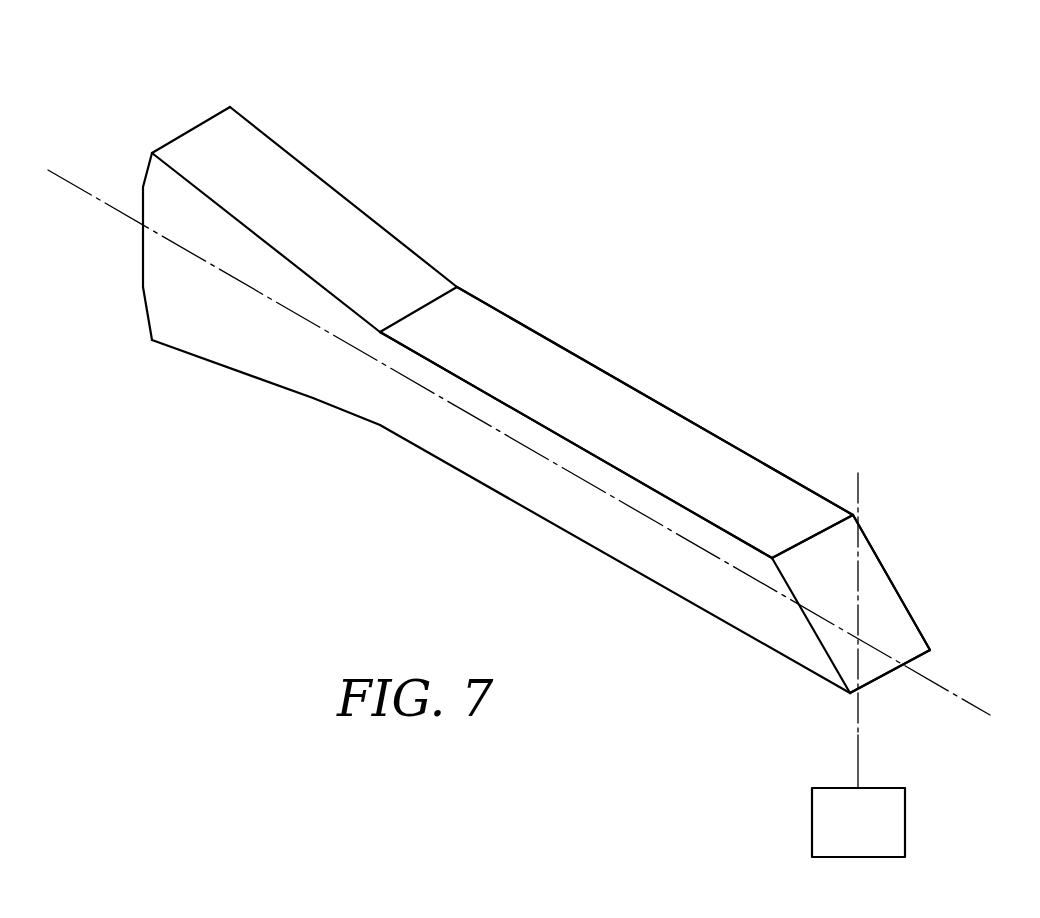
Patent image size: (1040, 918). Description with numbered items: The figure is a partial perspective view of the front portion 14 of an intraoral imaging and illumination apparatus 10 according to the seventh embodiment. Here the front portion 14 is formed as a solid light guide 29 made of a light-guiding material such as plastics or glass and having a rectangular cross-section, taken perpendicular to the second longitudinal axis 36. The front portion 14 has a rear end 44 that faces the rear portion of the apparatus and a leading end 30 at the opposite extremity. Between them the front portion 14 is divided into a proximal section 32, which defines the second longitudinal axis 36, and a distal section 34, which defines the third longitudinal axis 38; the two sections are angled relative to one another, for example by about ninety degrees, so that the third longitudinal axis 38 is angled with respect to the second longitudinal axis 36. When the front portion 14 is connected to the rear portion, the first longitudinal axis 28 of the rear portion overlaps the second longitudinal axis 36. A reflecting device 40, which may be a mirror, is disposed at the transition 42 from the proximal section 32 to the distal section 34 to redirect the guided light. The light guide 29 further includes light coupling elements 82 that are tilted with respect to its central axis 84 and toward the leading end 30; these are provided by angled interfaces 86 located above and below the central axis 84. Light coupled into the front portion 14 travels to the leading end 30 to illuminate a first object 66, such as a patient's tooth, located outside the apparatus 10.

The intraoral imaging and illumination apparatus 10 is at (502, 400).
The front portion 14 is at (675, 387).
The first longitudinal axis 28 is at (67, 178).
The light guide 29 is at (562, 317).
The leading end 30 is at (873, 685).
The proximal section 32 is at (655, 379).
The distal section 34 is at (897, 583).
The second longitudinal axis 36 is at (594, 445).
The third longitudinal axis 38 is at (852, 697).
The reflecting device 40 is at (870, 530).
The transition 42 is at (867, 518).
The rear end 44 is at (230, 107).
The first object 66 is at (905, 825).
The light coupling elements 82 is at (98, 216).
The central axis 84 is at (677, 532).
The angled interfaces 86 is at (145, 170).